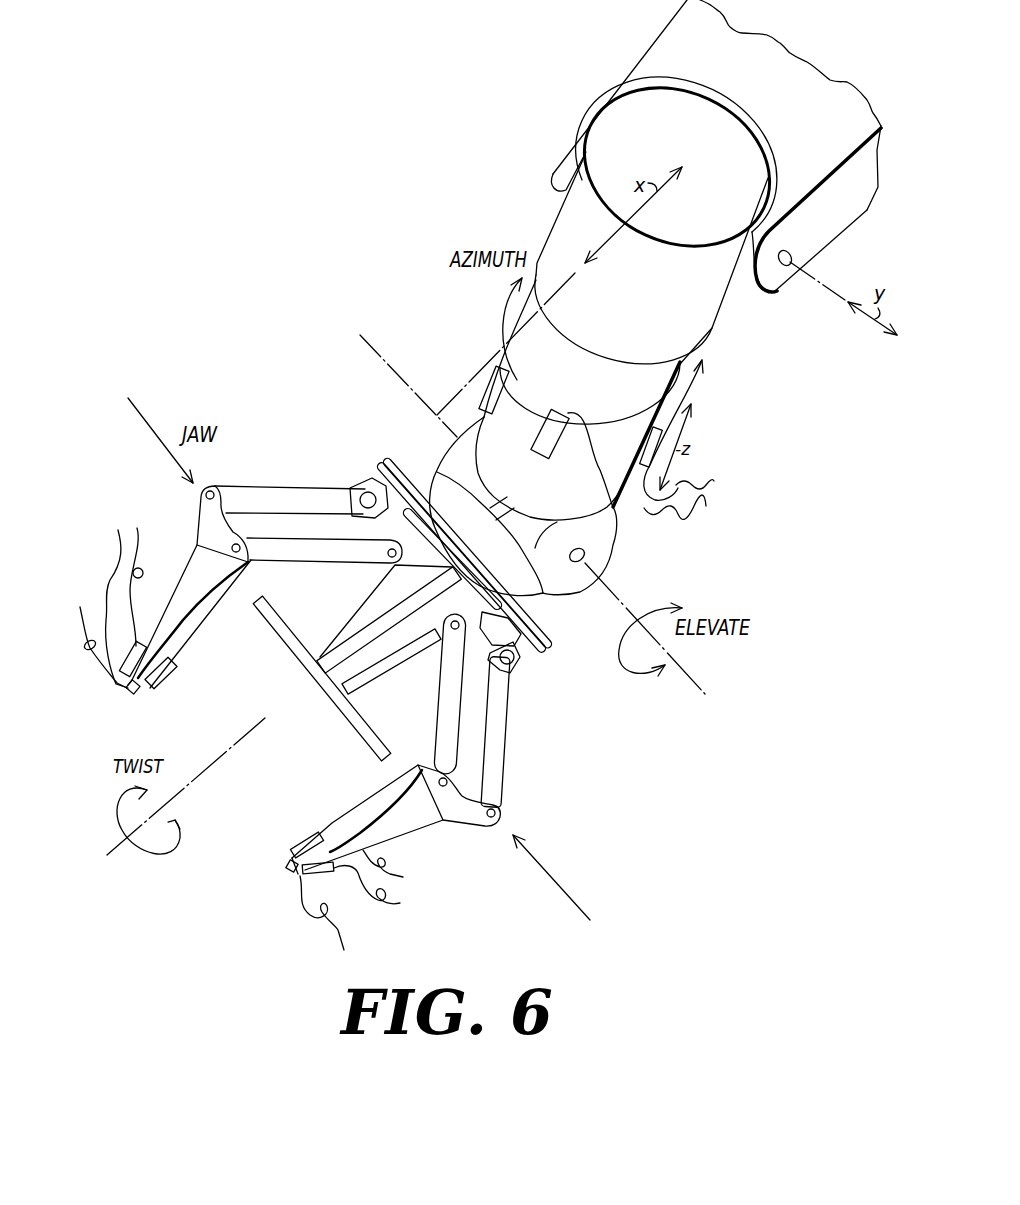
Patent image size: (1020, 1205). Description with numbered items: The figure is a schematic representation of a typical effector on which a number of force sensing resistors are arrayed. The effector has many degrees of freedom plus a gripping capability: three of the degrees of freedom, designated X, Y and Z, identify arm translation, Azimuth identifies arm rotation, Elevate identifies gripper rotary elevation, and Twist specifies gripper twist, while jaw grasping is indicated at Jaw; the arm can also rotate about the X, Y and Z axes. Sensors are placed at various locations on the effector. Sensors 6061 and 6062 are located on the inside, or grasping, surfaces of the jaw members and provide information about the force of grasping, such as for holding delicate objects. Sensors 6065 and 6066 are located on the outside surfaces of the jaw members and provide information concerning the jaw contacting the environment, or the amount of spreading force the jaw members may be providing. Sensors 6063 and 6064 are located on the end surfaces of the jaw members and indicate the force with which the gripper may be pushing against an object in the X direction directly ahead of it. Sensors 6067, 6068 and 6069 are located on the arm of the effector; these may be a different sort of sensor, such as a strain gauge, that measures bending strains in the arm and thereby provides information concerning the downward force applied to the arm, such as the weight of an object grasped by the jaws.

The force sensing resistor 6061 is at (170, 670).
The force sensing resistor 6062 is at (308, 834).
The force sensing resistor 6063 is at (131, 692).
The force sensing resistor 6064 is at (288, 869).
The force sensing resistor 6065 is at (104, 618).
The force sensing resistor 6066 is at (325, 875).
The arm sensor 6067 is at (553, 457).
The arm sensor 6068 is at (645, 434).
The arm sensor 6069 is at (490, 370).